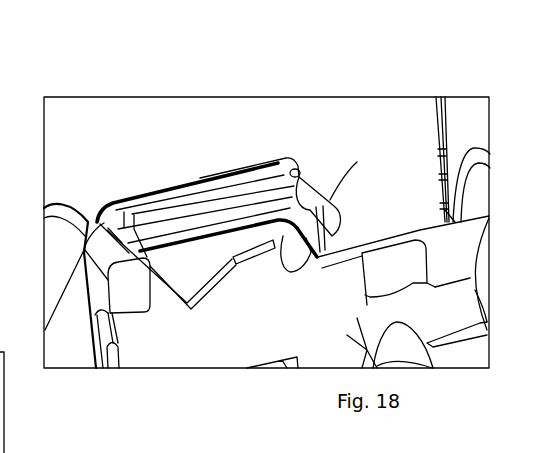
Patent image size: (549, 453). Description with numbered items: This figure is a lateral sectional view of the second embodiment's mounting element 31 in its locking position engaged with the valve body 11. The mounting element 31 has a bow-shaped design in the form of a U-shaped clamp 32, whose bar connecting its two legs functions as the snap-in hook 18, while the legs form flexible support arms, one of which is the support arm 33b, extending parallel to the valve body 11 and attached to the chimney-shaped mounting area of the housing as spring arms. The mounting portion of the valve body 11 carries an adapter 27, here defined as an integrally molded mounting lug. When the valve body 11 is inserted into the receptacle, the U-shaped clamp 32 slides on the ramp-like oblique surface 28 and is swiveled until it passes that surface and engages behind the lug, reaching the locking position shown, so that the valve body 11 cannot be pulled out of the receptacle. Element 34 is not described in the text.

The valve body 11 is at (428, 127).
The snap-in hook 18 is at (305, 256).
The adapter 27 is at (274, 264).
The oblique surface 28 is at (207, 284).
The mounting element 31 is at (192, 224).
The U-shaped clamp 32 is at (212, 181).
The support arm 33b is at (163, 254).
The strip 34 is at (256, 272).